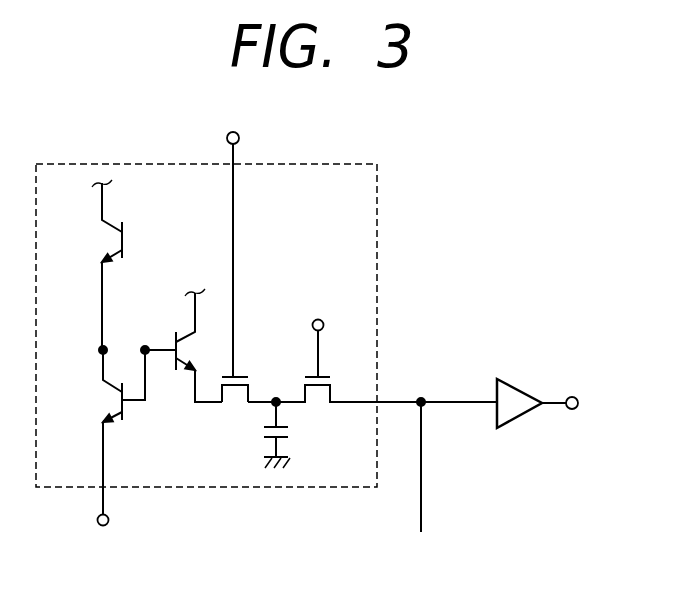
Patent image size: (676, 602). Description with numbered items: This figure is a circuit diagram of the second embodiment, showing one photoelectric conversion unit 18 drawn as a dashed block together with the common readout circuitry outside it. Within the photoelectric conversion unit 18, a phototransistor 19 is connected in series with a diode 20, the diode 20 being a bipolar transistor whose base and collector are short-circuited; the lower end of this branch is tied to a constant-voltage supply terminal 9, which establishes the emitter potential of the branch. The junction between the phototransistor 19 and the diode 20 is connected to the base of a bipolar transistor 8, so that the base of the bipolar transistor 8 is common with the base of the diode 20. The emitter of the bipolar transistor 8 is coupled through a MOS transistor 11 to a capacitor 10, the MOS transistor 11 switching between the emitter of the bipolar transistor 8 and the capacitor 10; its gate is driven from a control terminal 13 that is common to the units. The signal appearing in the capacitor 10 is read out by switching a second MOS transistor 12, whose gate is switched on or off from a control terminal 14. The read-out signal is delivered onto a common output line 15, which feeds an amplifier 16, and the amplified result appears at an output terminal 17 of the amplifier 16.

The bipolar transistor 8 is at (175, 336).
The constant-voltage supply terminal 9 is at (109, 519).
The capacitor 10 is at (292, 433).
The MOS transistor 11 is at (238, 373).
The MOS transistor 12 is at (322, 373).
The control terminal 13 is at (240, 135).
The control terminal 14 is at (318, 318).
The common output line 15 is at (441, 400).
The amplifier 16 is at (520, 393).
The output terminal 17 is at (575, 395).
The photoelectric conversion unit 18 is at (380, 205).
The phototransistor 19 is at (108, 236).
The diode 20 is at (108, 400).